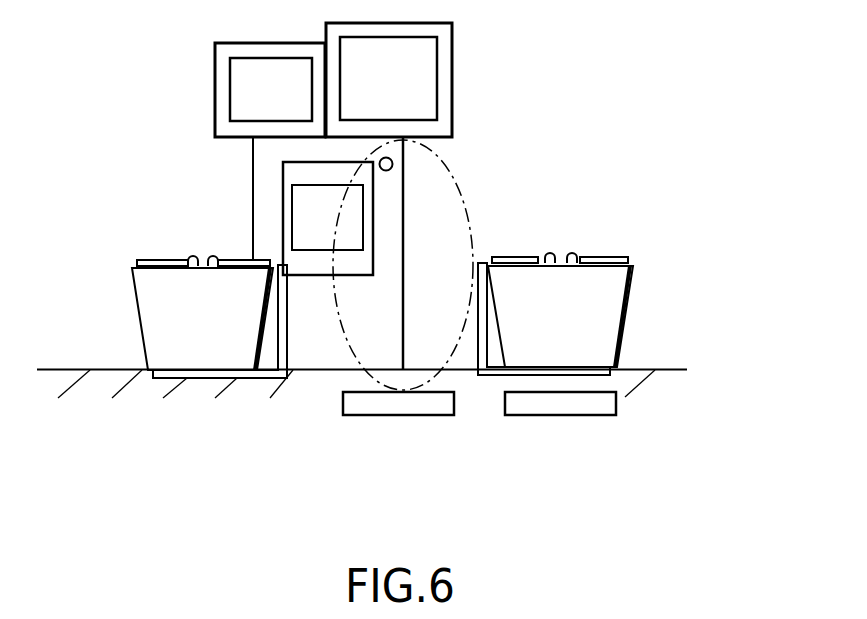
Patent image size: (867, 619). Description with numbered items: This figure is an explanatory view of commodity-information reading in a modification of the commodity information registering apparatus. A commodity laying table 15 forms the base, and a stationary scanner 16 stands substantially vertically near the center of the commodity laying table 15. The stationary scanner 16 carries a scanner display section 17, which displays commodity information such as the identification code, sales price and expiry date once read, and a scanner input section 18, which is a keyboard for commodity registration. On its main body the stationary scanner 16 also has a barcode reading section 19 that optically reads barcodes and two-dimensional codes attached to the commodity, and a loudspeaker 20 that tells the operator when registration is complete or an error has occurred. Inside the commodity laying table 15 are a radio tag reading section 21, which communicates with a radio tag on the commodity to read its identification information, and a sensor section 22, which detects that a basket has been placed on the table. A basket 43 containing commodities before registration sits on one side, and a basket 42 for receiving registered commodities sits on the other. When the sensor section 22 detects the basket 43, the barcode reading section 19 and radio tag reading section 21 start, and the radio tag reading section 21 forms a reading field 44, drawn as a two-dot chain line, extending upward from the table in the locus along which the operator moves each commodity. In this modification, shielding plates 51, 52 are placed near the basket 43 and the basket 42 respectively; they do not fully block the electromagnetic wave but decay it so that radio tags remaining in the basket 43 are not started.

The commodity laying table 15 is at (678, 358).
The stationary scanner 16 is at (253, 222).
The scanner display section 17 is at (243, 91).
The scanner input section 18 is at (427, 50).
The barcode reading section 19 is at (305, 205).
The loudspeaker 20 is at (393, 160).
The radio tag reading section 21 is at (417, 416).
The sensor section 22 is at (578, 416).
The basket 42 is at (143, 300).
The basket 43 is at (632, 283).
The reading field 44 is at (345, 345).
The shielding plate 51 is at (617, 372).
The shielding plate 52 is at (202, 380).